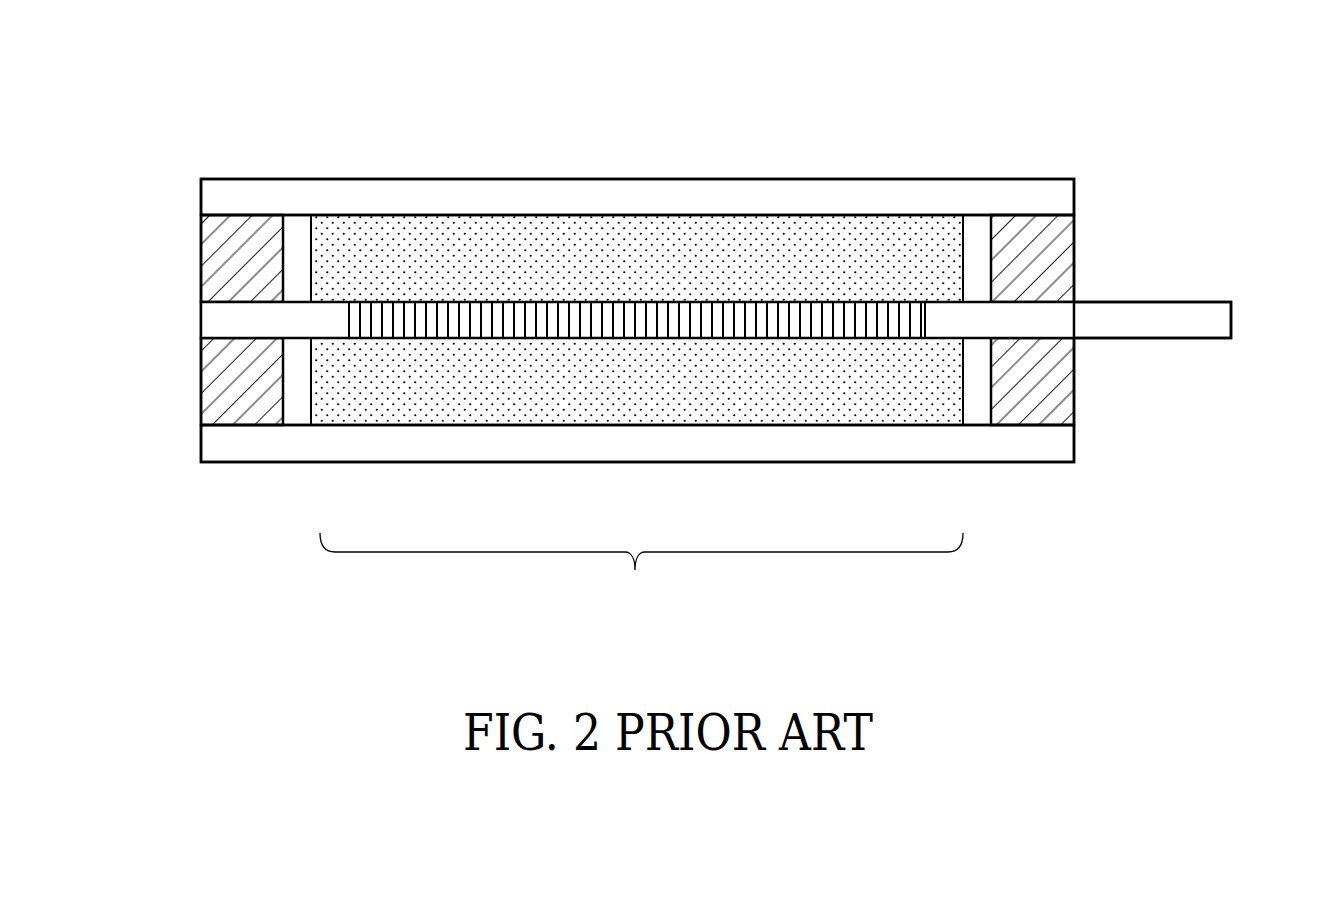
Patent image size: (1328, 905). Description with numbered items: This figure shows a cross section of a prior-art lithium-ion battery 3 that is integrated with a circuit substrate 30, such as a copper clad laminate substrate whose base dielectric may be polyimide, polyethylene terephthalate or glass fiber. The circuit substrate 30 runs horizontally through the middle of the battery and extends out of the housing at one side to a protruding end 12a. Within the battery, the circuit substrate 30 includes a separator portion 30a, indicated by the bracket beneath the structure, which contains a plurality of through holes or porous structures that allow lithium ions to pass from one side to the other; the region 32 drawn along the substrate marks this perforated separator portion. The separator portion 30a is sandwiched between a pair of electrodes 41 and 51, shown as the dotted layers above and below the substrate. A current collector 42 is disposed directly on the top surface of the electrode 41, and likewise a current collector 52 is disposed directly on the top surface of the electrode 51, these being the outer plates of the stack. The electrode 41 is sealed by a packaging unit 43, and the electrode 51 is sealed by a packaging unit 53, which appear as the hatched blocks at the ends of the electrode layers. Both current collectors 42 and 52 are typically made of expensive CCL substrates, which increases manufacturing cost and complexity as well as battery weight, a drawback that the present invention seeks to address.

The lithium-ion battery 3 is at (1072, 110).
The shaft end portion 12a is at (1153, 315).
The circuit substrate 30 is at (1250, 320).
The separator portion 30a is at (641, 574).
The spring 32 is at (350, 318).
The electrode 41 is at (475, 280).
The current collector 42 is at (625, 200).
The packaging unit 43 is at (227, 272).
The electrode 51 is at (475, 370).
The current collector 52 is at (625, 442).
The packaging unit 53 is at (227, 370).